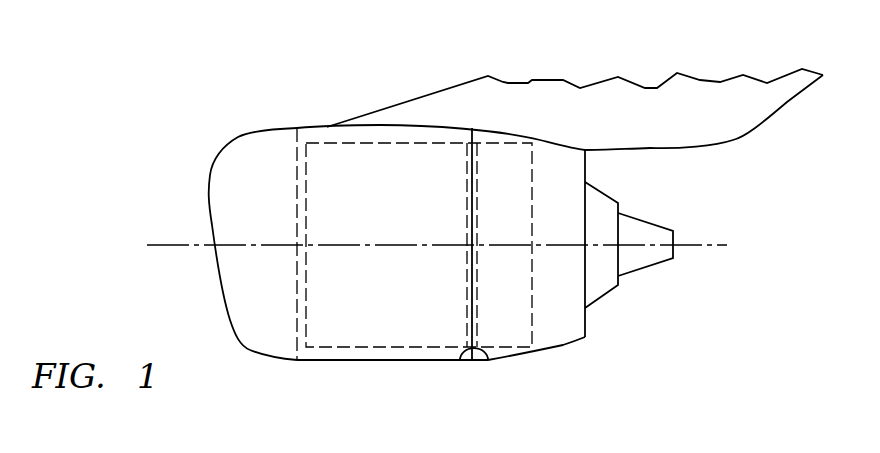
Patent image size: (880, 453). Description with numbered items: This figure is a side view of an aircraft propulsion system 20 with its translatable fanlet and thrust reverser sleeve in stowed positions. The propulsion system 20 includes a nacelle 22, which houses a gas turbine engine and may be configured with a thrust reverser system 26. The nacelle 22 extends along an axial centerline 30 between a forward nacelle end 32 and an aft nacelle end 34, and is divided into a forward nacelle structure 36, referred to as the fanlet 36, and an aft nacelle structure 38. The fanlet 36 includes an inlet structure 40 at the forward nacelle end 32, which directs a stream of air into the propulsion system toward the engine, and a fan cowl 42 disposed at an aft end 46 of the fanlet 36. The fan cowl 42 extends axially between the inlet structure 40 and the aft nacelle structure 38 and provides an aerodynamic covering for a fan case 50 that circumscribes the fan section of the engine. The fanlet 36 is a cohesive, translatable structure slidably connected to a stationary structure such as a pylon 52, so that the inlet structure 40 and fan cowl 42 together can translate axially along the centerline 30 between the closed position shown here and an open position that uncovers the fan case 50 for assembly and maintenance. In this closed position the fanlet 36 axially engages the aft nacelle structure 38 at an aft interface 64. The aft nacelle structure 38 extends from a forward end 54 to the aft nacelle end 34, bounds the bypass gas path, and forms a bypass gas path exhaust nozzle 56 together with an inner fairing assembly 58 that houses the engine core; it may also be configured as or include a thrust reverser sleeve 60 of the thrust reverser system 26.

The aircraft propulsion system 20 is at (224, 118).
The nacelle 22 is at (318, 127).
The thrust reverser system 26 is at (503, 352).
The axial centerline 30 is at (707, 245).
The forward nacelle end 32 is at (210, 173).
The aft nacelle end 34 is at (588, 163).
The forward nacelle structure (fanlet) 36 is at (305, 363).
The aft nacelle structure 38 is at (547, 357).
The inlet structure 40 is at (250, 350).
The fan cowl 42 is at (388, 362).
The aft end of the fanlet 46 is at (488, 362).
The fan case 50 is at (340, 347).
The pylon 52 is at (425, 97).
The forward end of the aft nacelle structure 54 is at (460, 362).
The bypass gas path exhaust nozzle 56 is at (587, 322).
The inner fairing assembly 58 is at (607, 295).
The thrust reverser sleeve 60 is at (562, 347).
The aft interface 64 is at (472, 128).